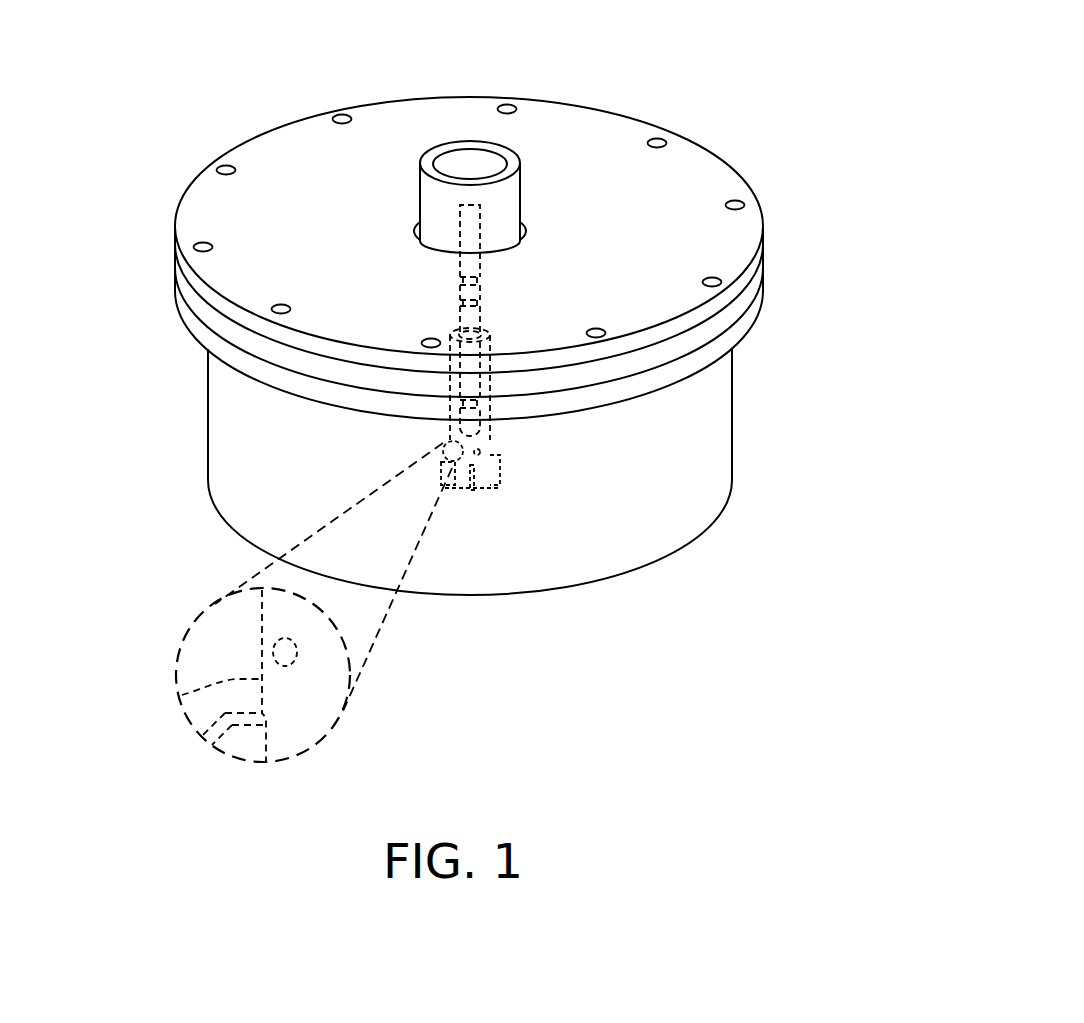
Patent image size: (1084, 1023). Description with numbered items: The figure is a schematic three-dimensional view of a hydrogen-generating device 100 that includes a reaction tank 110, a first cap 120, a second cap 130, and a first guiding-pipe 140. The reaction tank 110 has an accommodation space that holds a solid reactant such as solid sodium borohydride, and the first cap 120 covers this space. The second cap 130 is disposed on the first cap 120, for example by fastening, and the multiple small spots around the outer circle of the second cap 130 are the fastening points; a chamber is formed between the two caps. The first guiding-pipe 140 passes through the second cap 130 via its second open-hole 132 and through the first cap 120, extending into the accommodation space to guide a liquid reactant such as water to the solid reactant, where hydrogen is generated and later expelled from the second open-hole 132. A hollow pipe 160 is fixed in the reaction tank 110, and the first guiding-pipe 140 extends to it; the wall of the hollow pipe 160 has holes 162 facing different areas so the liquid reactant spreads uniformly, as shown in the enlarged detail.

The hydrogen-generating device 100 is at (815, 650).
The reaction tank 110 is at (722, 419).
The first cap 120 is at (750, 298).
The second cap 130 is at (750, 274).
The second open-hole 132 is at (463, 166).
The first guiding-pipe 140 is at (482, 220).
The hollow pipe 160 is at (182, 695).
The holes 162 is at (278, 652).